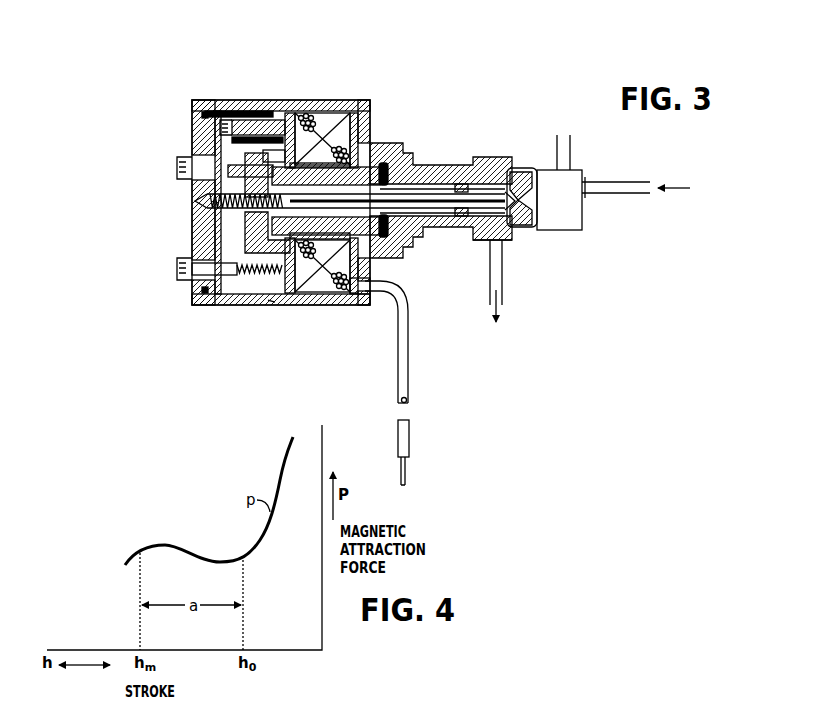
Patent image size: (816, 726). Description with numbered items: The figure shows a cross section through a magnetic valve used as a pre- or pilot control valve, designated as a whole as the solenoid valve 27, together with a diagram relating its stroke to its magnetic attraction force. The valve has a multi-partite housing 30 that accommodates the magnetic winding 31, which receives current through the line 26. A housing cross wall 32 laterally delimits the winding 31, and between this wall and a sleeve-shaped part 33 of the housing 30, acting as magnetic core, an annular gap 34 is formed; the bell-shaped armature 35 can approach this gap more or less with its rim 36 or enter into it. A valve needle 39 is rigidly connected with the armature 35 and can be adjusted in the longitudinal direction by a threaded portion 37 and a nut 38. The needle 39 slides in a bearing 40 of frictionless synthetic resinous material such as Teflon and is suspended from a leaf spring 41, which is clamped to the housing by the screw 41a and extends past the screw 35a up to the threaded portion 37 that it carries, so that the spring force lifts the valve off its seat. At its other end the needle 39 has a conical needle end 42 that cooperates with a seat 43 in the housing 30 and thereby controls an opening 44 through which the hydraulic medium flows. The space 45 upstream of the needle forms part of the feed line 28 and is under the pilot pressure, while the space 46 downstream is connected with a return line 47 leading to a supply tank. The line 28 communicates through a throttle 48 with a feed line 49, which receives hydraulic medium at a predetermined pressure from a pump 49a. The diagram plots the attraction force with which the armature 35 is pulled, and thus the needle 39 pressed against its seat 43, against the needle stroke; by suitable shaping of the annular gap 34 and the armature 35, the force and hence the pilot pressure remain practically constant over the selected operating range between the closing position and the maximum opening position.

The line 26 is at (409, 428).
The solenoid valve 27 is at (321, 100).
The feed line 28 is at (571, 152).
The multi-partite housing 30 is at (275, 302).
The magnetic winding 31 is at (323, 280).
The housing cross wall 32 is at (288, 294).
The sleeve-shaped part 33 is at (373, 295).
The annular gap 34 is at (262, 252).
The bell-shaped armature 35 is at (247, 243).
The screw 35a is at (177, 165).
The rim 36 is at (260, 153).
The threaded portion 37 is at (250, 158).
The nut 38 is at (215, 184).
The valve needle 39 is at (420, 198).
The bearing 40 is at (461, 184).
The leaf spring 41 is at (230, 150).
The screw 41a is at (235, 117).
The conical needle end 42 is at (516, 172).
The seat 43 is at (509, 240).
The opening 44 is at (530, 170).
The space 45 is at (562, 232).
The space 46 is at (485, 240).
The return line 47 is at (490, 292).
The throttle 48 is at (586, 182).
The feed line 49 is at (633, 195).
The pump 49a is at (736, 190).